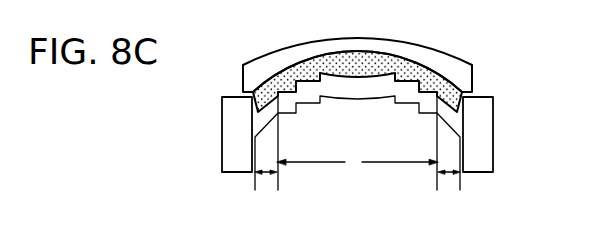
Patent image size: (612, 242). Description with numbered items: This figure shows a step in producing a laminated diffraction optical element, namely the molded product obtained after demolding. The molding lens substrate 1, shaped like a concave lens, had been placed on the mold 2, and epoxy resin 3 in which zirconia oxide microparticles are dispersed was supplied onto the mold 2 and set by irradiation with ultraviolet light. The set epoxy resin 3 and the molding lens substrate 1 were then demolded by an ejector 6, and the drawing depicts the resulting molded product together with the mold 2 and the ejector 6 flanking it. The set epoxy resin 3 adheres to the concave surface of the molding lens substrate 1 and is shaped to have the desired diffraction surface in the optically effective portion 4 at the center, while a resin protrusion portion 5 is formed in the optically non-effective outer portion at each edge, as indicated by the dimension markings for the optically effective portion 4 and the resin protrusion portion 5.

The molding lens substrate 1 is at (430, 57).
The mold 2 is at (268, 147).
The epoxy resin 3 is at (457, 80).
The optically effective portion 4 is at (357, 163).
The resin protrusion portion 5 is at (357, 186).
The ejector 6 is at (477, 127).